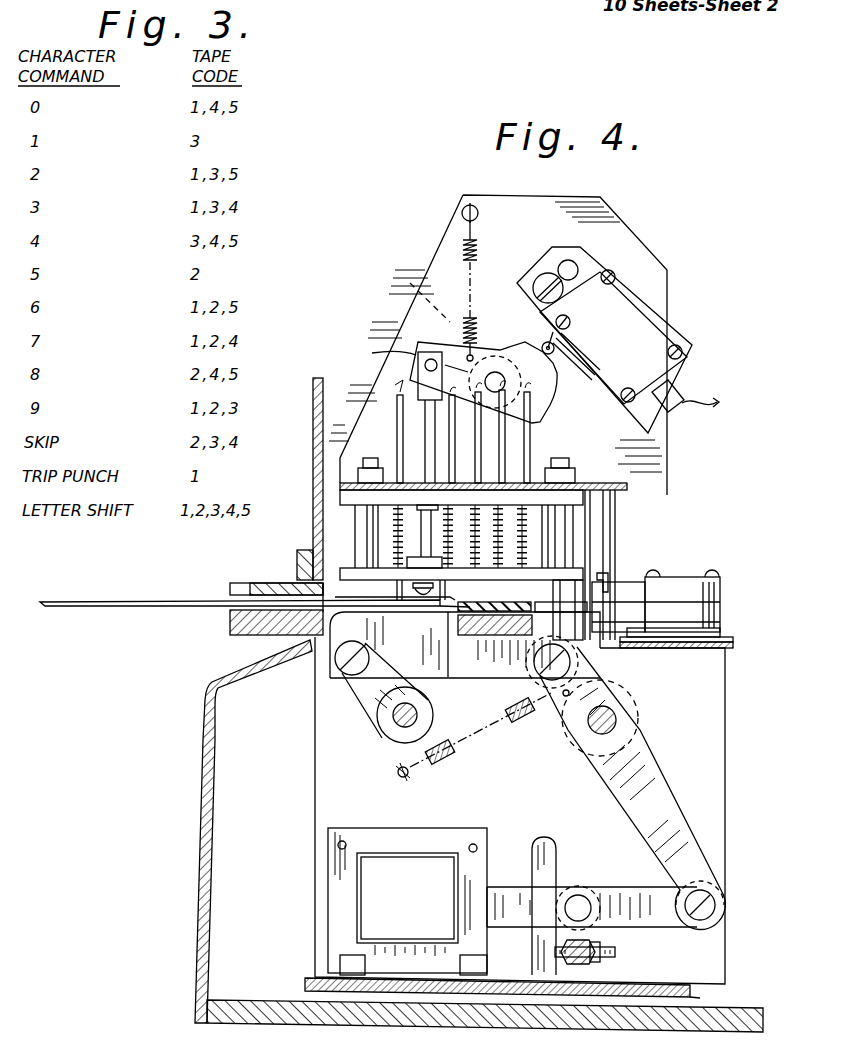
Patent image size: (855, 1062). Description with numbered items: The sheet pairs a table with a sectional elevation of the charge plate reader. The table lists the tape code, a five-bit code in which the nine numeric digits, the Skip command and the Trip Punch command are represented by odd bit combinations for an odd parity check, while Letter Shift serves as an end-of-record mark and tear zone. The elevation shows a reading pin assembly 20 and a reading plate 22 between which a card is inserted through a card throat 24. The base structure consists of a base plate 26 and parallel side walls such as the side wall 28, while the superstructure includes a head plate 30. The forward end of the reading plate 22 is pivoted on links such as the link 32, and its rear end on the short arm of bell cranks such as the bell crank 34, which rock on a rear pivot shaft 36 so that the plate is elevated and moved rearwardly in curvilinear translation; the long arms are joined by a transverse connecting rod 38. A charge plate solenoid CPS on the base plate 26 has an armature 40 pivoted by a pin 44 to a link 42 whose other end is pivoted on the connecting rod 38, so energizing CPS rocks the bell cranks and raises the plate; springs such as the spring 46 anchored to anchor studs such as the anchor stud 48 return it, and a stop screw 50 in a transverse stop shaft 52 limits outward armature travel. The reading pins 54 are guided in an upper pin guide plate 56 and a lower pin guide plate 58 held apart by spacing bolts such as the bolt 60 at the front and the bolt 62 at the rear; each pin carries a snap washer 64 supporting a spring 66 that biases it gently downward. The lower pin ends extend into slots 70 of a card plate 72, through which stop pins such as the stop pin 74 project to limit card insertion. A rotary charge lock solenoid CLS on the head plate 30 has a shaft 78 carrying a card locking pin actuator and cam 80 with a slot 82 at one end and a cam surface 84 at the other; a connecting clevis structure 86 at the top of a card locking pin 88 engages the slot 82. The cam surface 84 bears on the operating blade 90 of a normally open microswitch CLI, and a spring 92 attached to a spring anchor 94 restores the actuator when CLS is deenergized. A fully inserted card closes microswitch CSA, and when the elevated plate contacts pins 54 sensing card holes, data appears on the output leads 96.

The reading pin assembly 20 is at (320, 542).
The reading plate 22 is at (456, 668).
The card throat 24 is at (300, 590).
The base plate 26 is at (700, 996).
The side wall 28 is at (718, 780).
The head plate 30 is at (667, 462).
The link 32 is at (372, 674).
The bell crank 34 is at (400, 722).
The rear pivot shaft 36 is at (612, 716).
The transverse connecting rod 38 is at (716, 903).
The armature 40 is at (540, 860).
The link 42 is at (634, 927).
The pin 44 is at (579, 895).
The spring 46 is at (500, 735).
The anchor stud 48 is at (406, 778).
The stop screw 50 is at (603, 958).
The transverse stop shaft 52 is at (578, 962).
The reading pins 54 is at (449, 425).
The upper pin guide plate 56 is at (572, 505).
The lower pin guide plate 58 is at (575, 580).
The spacing bolt 60 is at (362, 524).
The spacing bolt 62 is at (566, 536).
The snap washer 64 is at (478, 567).
The spring 66 is at (470, 522).
The slots 70 is at (414, 602).
The card plate 72 is at (499, 636).
The stop pin 74 is at (580, 596).
The rotary shaft 78 is at (540, 398).
The card locking pin actuator and cam 80 is at (528, 420).
The slot 82 is at (381, 352).
The cam surface 84 is at (553, 370).
The connecting clevis structure 86 is at (443, 392).
The card locking pin 88 is at (430, 440).
The operating blade 90 is at (578, 344).
The spring 92 is at (480, 258).
The spring anchor 94 is at (478, 212).
The output leads 96 is at (398, 386).
The rotary charge lock solenoid CLS is at (413, 295).
The microswitch CLI is at (650, 332).
The charge plate solenoid CPS is at (394, 868).
The microswitch CSA is at (706, 585).